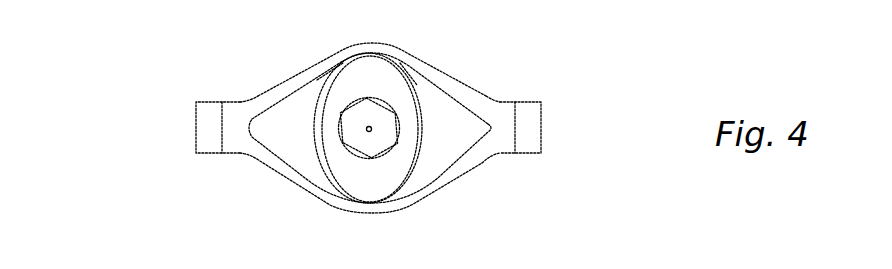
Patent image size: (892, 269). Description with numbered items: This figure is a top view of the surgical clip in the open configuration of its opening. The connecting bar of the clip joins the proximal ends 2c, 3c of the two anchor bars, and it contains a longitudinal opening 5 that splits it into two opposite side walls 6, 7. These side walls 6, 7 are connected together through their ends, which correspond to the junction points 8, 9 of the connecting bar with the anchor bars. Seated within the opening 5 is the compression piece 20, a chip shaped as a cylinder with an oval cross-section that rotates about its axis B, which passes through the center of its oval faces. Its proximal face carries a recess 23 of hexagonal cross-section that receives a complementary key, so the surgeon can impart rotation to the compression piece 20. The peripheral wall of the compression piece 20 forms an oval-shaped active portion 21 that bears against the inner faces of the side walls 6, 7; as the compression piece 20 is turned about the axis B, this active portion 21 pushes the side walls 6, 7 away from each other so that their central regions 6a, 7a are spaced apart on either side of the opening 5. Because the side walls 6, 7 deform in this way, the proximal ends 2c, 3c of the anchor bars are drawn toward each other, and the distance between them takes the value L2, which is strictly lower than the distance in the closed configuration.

The distance value between proximal ends in open configuration L2 is at (541, 100).
The longitudinal opening 5 is at (300, 137).
The proximal end 2c is at (196, 131).
The proximal end 3c is at (541, 131).
The side wall 6 is at (451, 63).
The central region 6a is at (366, 43).
The side wall 7 is at (472, 177).
The central region 7a is at (365, 216).
The junction point 8 is at (250, 94).
The junction point 9 is at (494, 90).
The compression piece 20 is at (433, 134).
The active portion 21 is at (343, 166).
The recess 23 is at (364, 130).
The axis of rotation B is at (371, 131).